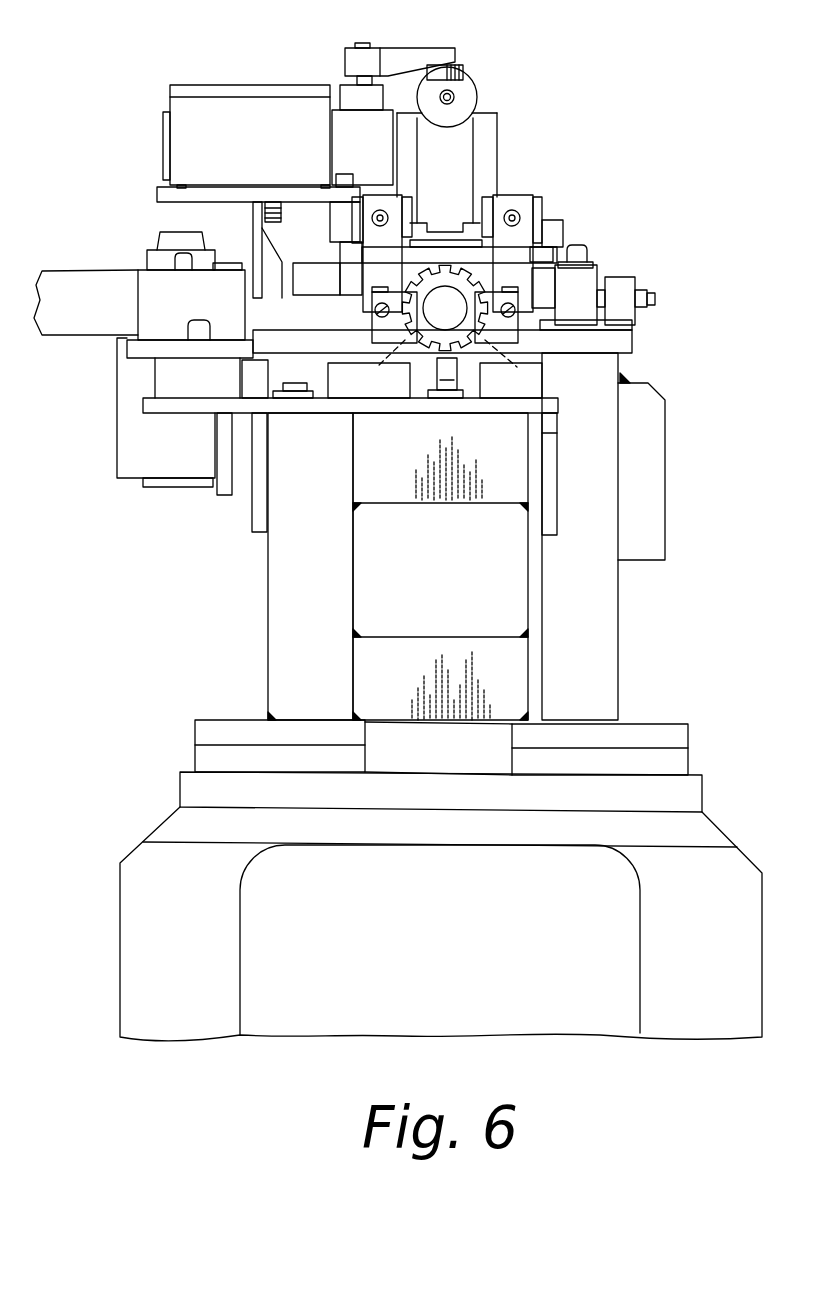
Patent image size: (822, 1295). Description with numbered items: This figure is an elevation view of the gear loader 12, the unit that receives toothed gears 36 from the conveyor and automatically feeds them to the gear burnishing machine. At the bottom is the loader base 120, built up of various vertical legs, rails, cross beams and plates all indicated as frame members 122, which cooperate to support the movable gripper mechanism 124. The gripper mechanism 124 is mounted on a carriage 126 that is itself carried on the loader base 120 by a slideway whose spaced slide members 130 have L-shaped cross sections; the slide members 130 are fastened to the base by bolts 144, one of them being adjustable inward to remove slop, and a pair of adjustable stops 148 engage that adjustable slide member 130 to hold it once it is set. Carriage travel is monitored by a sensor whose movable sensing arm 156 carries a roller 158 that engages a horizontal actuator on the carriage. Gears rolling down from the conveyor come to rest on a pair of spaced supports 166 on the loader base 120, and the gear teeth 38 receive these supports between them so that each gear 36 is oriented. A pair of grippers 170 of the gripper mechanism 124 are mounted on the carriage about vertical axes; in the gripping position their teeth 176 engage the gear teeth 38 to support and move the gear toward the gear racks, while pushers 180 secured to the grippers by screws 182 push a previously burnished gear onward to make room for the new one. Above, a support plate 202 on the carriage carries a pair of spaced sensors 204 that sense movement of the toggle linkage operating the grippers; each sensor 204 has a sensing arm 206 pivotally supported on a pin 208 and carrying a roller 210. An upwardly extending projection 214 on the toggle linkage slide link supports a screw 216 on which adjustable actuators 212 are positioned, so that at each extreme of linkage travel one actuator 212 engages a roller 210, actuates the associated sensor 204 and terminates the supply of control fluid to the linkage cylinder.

The gear loader 12 is at (580, 143).
The toothed gear 36 is at (479, 288).
The gear teeth 38 is at (420, 275).
The loader base 120 is at (622, 589).
The base frame members 122 is at (369, 414).
The gripper mechanism 124 is at (553, 199).
The carriage 126 is at (553, 237).
The slide member 130 is at (353, 270).
The bolt 144 is at (586, 249).
The adjustable stop 148 is at (637, 298).
The sensing arm 156 is at (258, 262).
The roller 158 is at (270, 204).
The spaced support 166 is at (473, 338).
The gripper 170 is at (406, 205).
The gripper teeth 176 is at (435, 369).
The pusher 180 is at (472, 325).
The screw 182 is at (376, 306).
The support plate 202 is at (178, 194).
The sensor 204 is at (229, 107).
The sensing arm 206 is at (386, 57).
The pin 208 is at (356, 44).
The roller 210 is at (462, 73).
The adjustable actuator 212 is at (470, 99).
The projection 214 is at (467, 134).
The screw 216 is at (441, 104).